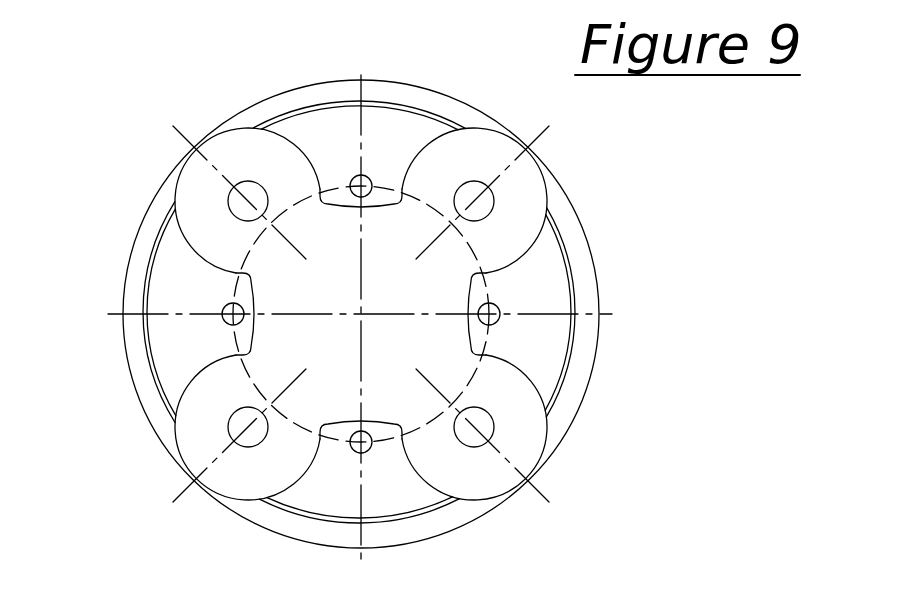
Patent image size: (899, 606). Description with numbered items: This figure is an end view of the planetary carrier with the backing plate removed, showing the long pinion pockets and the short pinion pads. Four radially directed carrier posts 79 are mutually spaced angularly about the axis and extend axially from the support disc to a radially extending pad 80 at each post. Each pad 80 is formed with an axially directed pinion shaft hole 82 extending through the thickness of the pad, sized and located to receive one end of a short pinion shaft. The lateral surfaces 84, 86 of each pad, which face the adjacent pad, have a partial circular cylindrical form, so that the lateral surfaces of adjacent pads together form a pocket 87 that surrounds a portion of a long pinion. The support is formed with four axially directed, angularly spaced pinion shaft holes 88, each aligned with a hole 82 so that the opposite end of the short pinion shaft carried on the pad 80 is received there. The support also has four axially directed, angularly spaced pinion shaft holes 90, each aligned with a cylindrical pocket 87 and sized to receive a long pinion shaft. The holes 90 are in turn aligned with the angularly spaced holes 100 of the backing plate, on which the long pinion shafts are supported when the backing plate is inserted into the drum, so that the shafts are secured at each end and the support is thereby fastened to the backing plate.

The carrier post 79 is at (555, 356).
The pad 80 is at (342, 501).
The pinion shaft hole 82 is at (222, 316).
The lateral surface 84 is at (305, 478).
The lateral surface 86 is at (422, 474).
The pocket 87 is at (535, 430).
The pinion shaft hole 88 is at (497, 306).
The pinion shaft hole 90 is at (244, 181).
The hole 100 is at (494, 201).